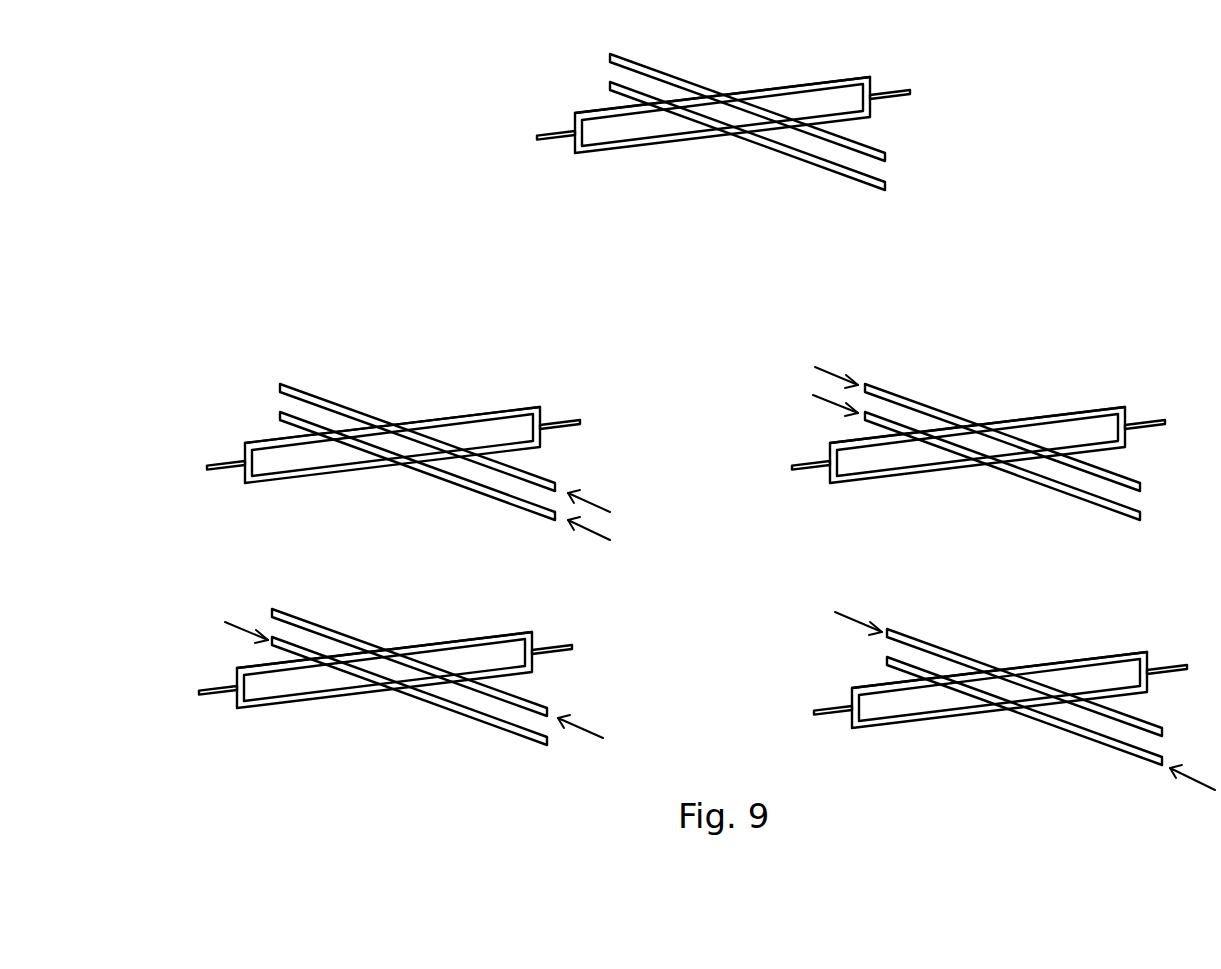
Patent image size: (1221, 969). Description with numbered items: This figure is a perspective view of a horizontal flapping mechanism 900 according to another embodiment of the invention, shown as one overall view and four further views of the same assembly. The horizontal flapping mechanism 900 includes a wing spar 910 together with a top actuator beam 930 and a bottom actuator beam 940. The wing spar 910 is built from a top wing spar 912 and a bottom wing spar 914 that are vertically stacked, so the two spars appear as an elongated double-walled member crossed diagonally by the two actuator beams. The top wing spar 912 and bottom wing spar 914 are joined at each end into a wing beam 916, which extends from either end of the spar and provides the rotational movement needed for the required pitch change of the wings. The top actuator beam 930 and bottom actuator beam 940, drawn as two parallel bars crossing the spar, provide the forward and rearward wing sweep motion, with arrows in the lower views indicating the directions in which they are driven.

The horizontal flapping mechanism 900 is at (464, 78).
The wing spar 910 is at (648, 425).
The top wing spar 912 is at (815, 82).
The bottom wing spar 914 is at (617, 150).
The wing beam 916 is at (897, 88).
The top actuator beam 930 is at (672, 75).
The bottom actuator beam 940 is at (790, 155).